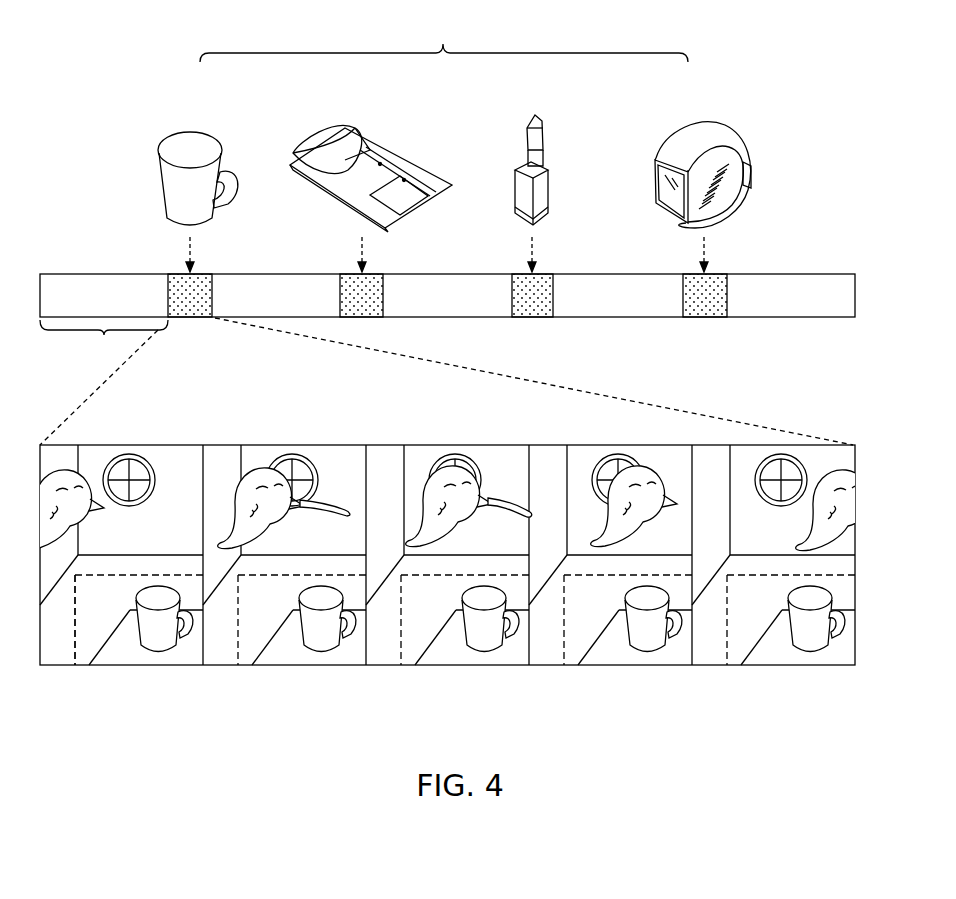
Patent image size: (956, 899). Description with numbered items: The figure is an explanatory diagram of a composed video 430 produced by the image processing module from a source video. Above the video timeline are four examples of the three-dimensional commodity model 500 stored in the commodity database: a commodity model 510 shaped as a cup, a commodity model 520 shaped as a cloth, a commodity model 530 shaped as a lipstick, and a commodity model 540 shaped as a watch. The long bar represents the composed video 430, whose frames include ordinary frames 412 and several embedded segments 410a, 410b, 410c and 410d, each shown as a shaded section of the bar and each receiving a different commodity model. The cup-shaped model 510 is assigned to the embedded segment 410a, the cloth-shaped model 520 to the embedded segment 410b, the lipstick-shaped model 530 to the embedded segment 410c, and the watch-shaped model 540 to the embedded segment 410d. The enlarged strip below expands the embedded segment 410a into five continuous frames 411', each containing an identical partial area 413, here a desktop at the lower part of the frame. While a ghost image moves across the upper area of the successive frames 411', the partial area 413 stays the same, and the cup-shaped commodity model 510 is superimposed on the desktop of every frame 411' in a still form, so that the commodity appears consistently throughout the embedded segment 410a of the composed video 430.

The 3D commodity model 500 is at (444, 41).
The cup-shaped 3D commodity model 510 is at (216, 138).
The cloth-shaped 3D commodity model 520 is at (370, 135).
The lipstick-shaped 3D commodity model 530 is at (550, 135).
The watch-shaped 3D commodity model 540 is at (668, 138).
The composed video 430 is at (102, 274).
The embedded segment 410a is at (196, 318).
The embedded segment 410b is at (366, 318).
The embedded segment 410c is at (545, 298).
The embedded segment 410d is at (709, 303).
The frame 412 is at (104, 341).
The frame of the embedded segment 411' is at (450, 587).
The partial area 413 is at (74, 643).